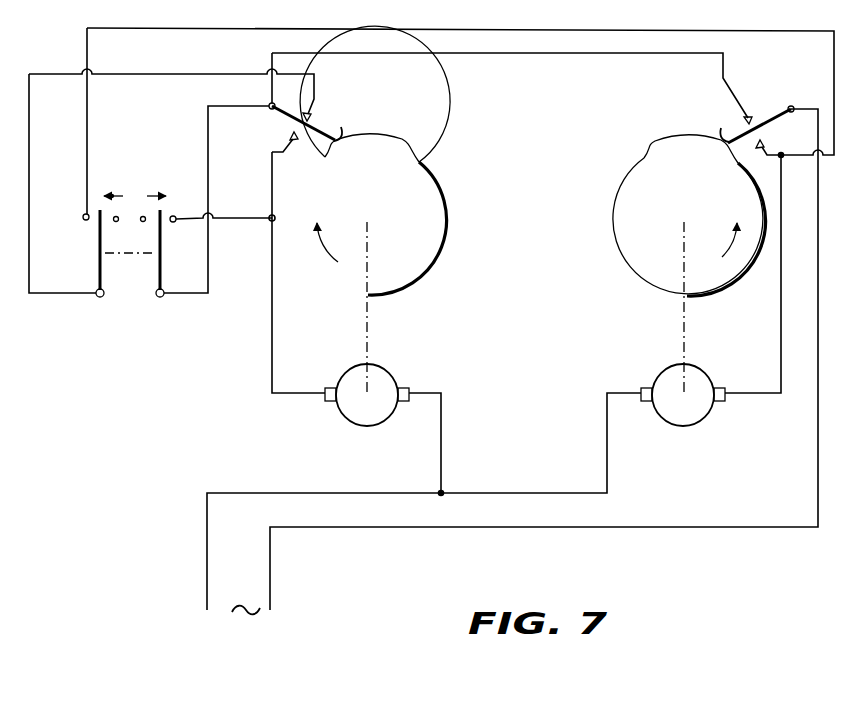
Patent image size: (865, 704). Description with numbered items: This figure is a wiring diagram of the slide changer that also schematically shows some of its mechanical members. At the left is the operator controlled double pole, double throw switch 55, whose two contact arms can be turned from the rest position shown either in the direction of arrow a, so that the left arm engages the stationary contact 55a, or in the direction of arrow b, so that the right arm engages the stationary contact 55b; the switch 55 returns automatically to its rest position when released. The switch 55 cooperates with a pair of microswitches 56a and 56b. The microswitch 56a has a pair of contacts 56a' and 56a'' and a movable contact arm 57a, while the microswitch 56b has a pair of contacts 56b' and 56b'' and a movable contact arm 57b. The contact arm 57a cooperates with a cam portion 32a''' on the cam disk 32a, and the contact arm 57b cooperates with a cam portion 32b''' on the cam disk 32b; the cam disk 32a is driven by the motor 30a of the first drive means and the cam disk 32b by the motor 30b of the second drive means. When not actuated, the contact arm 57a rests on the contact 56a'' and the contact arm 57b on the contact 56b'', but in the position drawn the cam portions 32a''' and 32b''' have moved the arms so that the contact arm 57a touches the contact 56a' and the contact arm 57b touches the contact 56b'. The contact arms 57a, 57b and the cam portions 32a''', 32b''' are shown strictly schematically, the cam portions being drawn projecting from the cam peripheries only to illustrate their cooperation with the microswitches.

The double pole, double throw switch 55 is at (136, 274).
The stationary contact 55a is at (84, 220).
The stationary contact 55b is at (175, 222).
The microswitch 56b is at (329, 118).
The contact 56b' is at (333, 99).
The contact 56b'' is at (263, 139).
The movable contact arm 57b is at (318, 131).
The cam portion 32b''' is at (398, 143).
The cam disk 32b is at (393, 209).
The motor 30b is at (389, 372).
The microswitch 56a is at (739, 119).
The contact 56a' is at (759, 97).
The contact 56a'' is at (786, 138).
The movable contact arm 57a is at (773, 110).
The cam portion 32a''' is at (661, 144).
The cam disk 32a is at (689, 275).
The motor 30a is at (706, 374).